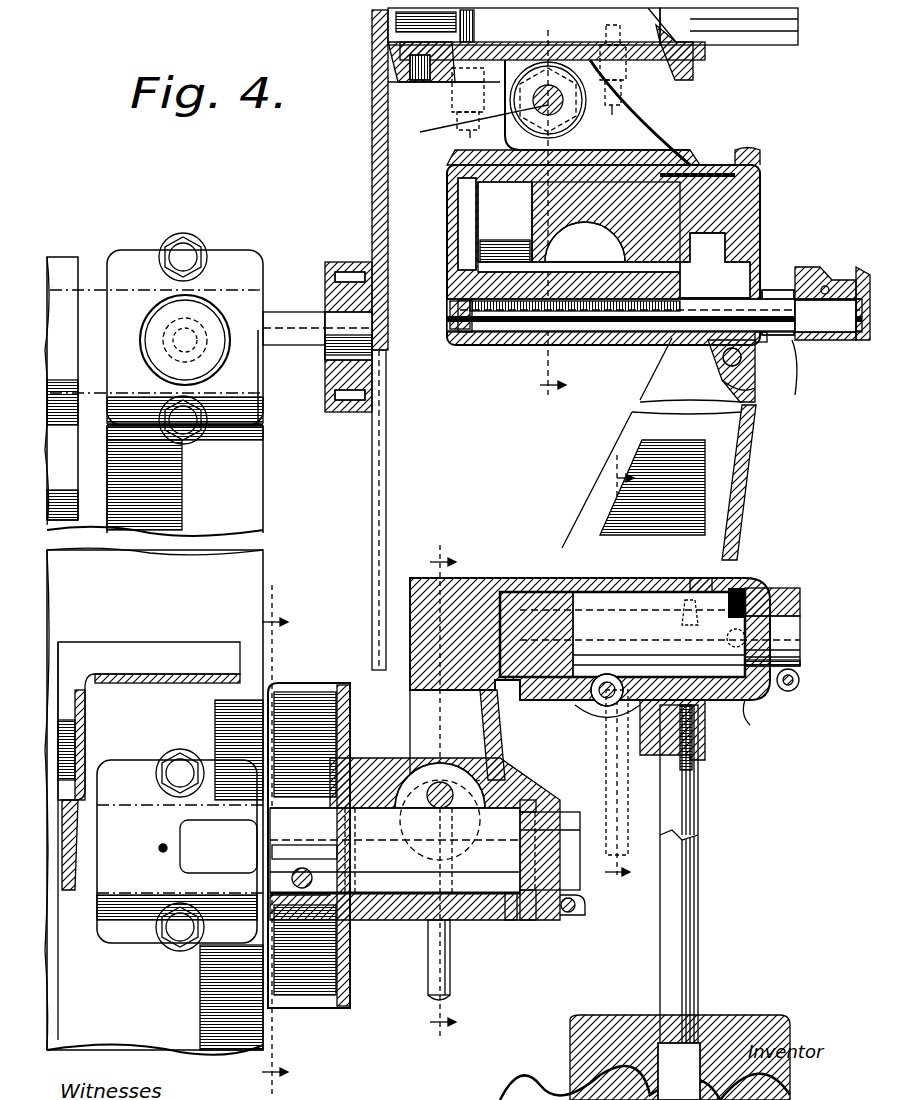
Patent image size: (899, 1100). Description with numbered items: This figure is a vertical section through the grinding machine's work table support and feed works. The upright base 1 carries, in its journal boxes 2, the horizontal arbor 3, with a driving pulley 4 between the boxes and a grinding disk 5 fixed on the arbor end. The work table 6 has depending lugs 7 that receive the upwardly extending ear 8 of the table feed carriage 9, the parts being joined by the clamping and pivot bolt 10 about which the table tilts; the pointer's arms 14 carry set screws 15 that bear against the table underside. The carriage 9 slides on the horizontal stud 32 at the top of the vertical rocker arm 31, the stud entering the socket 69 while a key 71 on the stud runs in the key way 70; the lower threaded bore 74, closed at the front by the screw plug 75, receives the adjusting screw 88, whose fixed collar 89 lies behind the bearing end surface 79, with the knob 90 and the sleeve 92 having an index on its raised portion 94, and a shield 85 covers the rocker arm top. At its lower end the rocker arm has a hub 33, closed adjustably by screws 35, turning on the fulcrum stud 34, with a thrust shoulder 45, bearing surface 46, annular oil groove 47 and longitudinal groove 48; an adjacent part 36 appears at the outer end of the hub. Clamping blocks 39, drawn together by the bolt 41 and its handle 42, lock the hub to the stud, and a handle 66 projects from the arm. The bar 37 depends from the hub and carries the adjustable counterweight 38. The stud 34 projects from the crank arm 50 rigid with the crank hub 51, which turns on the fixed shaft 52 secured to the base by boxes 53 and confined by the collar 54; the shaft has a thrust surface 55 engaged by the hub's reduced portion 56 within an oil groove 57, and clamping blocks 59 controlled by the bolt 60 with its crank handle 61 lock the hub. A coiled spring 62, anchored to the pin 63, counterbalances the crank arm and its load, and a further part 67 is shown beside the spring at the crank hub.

The upright base 1 is at (268, 522).
The journal boxes 2 is at (240, 262).
The rotary shaft or arbor 3 is at (308, 312).
The driving pulley 4 is at (76, 428).
The grinding disks 5 is at (372, 466).
The work table 6 is at (440, 62).
The depending lugs or ears 7 is at (620, 55).
The ear of table feed carriage 8 is at (600, 108).
The table feed carriage 9 is at (640, 172).
The clamping and pivot bolt 10 is at (479, 126).
The arms 14 is at (456, 108).
The set screws 15 is at (470, 132).
The rocker arm 31 is at (745, 445).
The table-carriage-receiving stud 32 is at (606, 222).
The hub or journal box 33 is at (648, 578).
The fulcrum stud 34 is at (650, 634).
The screws 35 is at (530, 578).
The bearing cap 36 is at (790, 600).
The bar 37 is at (686, 865).
The counterweight 38 is at (725, 1030).
The clamping or locking blocks 39 is at (612, 722).
The clamping bolt 41 is at (595, 712).
The depending handle 42 is at (612, 770).
The thrust shoulder 45 is at (745, 600).
The annular bearing surface 46 is at (742, 712).
The annular oil groove 47 is at (762, 700).
The longitudinal oil groove 48 is at (600, 550).
The radial or crank arm 50 is at (485, 728).
The crank hub or sleeve 51 is at (400, 920).
The fixed horizontal shaft 52 is at (100, 868).
The boxes or clamps 53 is at (180, 850).
The removable collar 54 is at (570, 915).
The annular thrust bearing surface 55 is at (518, 870).
The internal reduced portion 56 is at (510, 920).
The internal annular oil groove 57 is at (528, 920).
The clamping blocks 59 is at (420, 810).
The bolt 60 is at (445, 838).
The crank handle 61 is at (430, 962).
The coiled spring 62 is at (305, 845).
The pin 63 is at (302, 852).
The rod or handle 66 is at (755, 380).
The worm wheel 67 is at (348, 728).
The slideway or socket 69 is at (505, 222).
The key way 70 is at (512, 248).
The key 71 is at (612, 252).
The screw threaded bore 74 is at (620, 335).
The screw plug 75 is at (465, 336).
The outer end surface of feed screw bearing 79 is at (765, 342).
The shield 85 is at (730, 170).
The micrometer or adjusting screw 88 is at (713, 371).
The fixed collar 89 is at (772, 292).
The hand or finger knob 90 is at (850, 342).
The block or sleeve 92 is at (807, 377).
The raised portion 94 is at (815, 278).